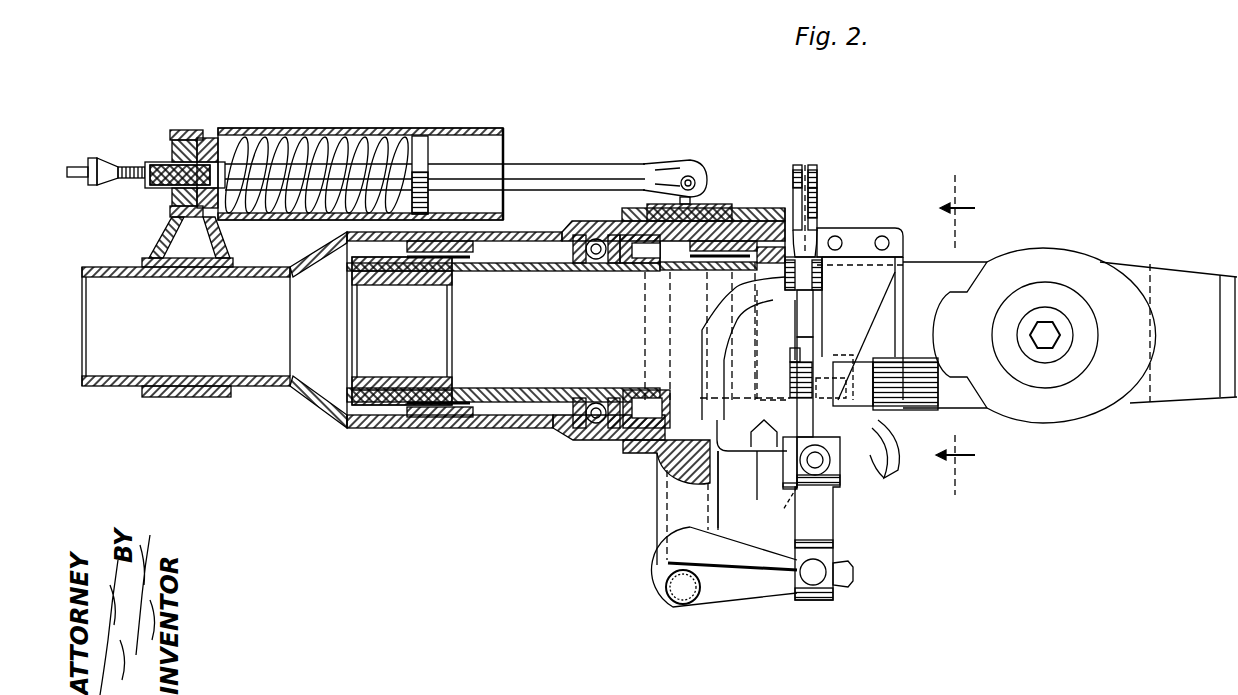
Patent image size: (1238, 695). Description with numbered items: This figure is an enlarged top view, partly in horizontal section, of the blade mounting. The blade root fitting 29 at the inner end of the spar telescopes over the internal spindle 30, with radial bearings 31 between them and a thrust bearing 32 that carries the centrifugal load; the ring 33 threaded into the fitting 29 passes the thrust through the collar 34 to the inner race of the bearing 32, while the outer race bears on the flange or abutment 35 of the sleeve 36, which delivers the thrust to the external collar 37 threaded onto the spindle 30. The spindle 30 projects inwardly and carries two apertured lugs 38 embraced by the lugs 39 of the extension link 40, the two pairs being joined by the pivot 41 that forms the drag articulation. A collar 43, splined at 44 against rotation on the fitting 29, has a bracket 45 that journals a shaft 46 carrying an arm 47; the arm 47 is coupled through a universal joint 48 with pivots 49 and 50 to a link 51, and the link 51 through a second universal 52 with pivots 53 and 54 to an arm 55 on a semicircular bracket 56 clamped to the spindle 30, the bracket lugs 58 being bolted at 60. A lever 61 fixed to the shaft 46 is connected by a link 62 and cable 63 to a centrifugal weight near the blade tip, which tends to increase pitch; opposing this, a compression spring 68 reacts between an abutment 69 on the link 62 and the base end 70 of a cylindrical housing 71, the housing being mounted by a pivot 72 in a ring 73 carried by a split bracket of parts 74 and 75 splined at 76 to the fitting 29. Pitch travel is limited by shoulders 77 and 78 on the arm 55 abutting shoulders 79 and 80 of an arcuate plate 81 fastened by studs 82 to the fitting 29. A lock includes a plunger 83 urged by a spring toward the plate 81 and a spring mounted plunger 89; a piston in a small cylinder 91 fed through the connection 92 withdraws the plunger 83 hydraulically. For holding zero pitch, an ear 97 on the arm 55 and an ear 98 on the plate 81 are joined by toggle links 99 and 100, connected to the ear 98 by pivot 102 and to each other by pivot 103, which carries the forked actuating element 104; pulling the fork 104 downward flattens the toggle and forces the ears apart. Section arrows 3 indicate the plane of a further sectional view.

The section line 3- 3 is at (965, 335).
The blade root fitting 29 is at (478, 430).
The internal spindle 30 is at (430, 376).
The radial bearings 31 is at (745, 230).
The thrust bearing 32 is at (593, 436).
The ring 33 is at (762, 225).
The collar 34 is at (743, 255).
The flange or abutment 35 is at (568, 428).
The sleeve 36 is at (517, 422).
The external collar 37 is at (347, 426).
The apertured lugs 38 is at (978, 262).
The apertured lugs 39 is at (1100, 410).
The extension link 40 is at (1228, 277).
The pivot 41 is at (1048, 322).
The collar 43 is at (650, 206).
The splines 44 is at (655, 452).
The bracket 45 is at (672, 508).
The shaft 46 is at (686, 590).
The arm 47 is at (745, 592).
The universal joint 48 is at (818, 600).
The pivot 49 is at (855, 575).
The pivot 50 is at (824, 578).
The link 51 is at (822, 522).
The universal 52 is at (828, 483).
The pivot 53 is at (790, 490).
The pivot 54 is at (828, 465).
The arm 55 is at (840, 387).
The semicircular bracket 56 is at (893, 300).
The lugs 58 is at (885, 233).
The bolt 60 is at (838, 236).
The lever 61 is at (680, 296).
The link 62 is at (548, 170).
The cable 63 is at (84, 166).
The compression spring 68 is at (331, 135).
The abutment 69 is at (420, 140).
The base end 70 is at (209, 138).
The cylindrical housing 71 is at (300, 140).
The pivot 72 is at (172, 160).
The ring 73 is at (185, 130).
The split bracket part 74 is at (165, 253).
The split bracket part 75 is at (190, 398).
The splines 76 is at (178, 272).
The shoulder 77 is at (805, 416).
The shoulder 78 is at (814, 342).
The shoulder 79 is at (790, 455).
The shoulder 80 is at (813, 305).
The arcuate plate 81 is at (746, 452).
The studs 82 is at (760, 452).
The plunger 83 is at (792, 380).
The spring mounted plunger 89 is at (864, 366).
The small cylinder 91 is at (928, 354).
The connection 92 is at (900, 462).
The apertured ear 97 is at (793, 357).
The apertured ear 98 is at (795, 170).
The toggle link 99 is at (806, 326).
The toggle link 100 is at (812, 212).
The pivot 102 is at (817, 166).
The pivot 103 is at (822, 276).
The forked actuating element 104 is at (840, 257).